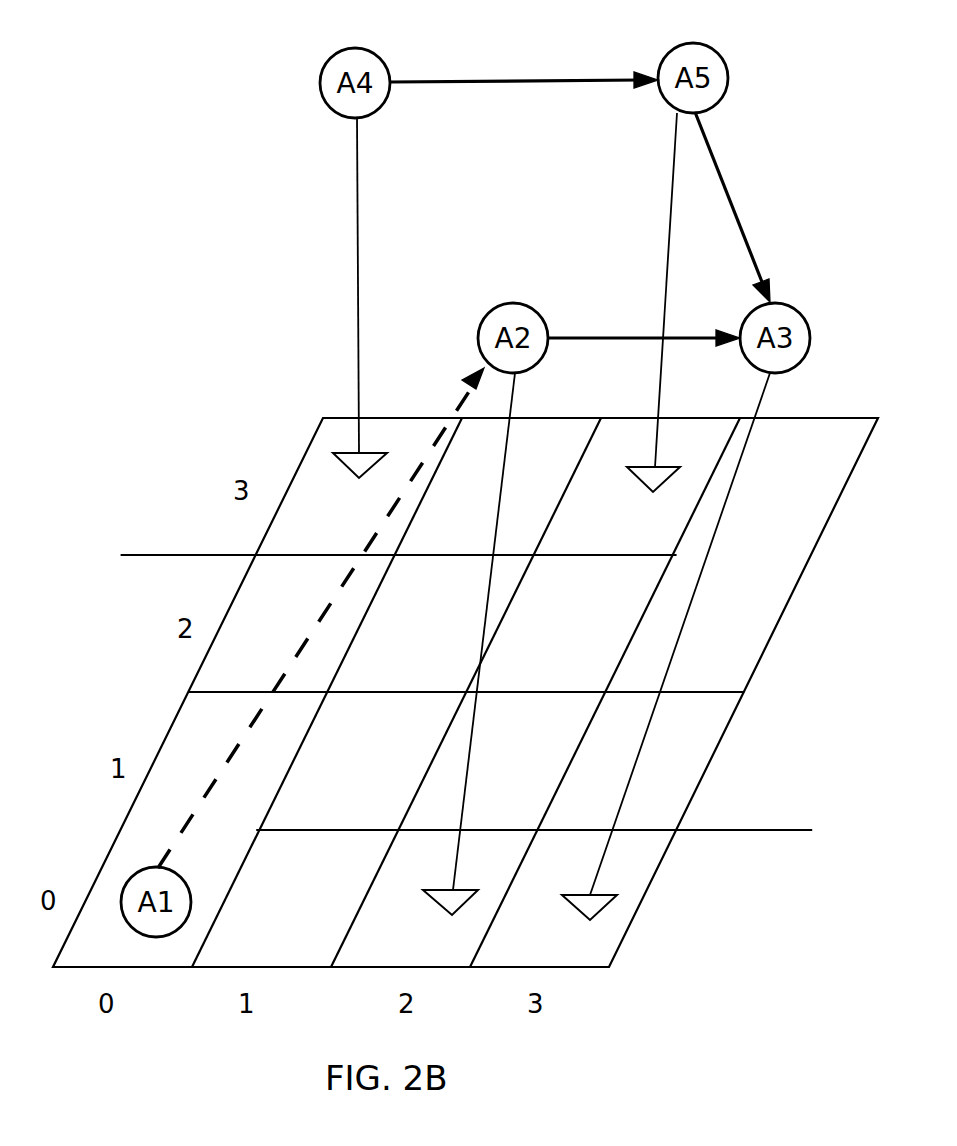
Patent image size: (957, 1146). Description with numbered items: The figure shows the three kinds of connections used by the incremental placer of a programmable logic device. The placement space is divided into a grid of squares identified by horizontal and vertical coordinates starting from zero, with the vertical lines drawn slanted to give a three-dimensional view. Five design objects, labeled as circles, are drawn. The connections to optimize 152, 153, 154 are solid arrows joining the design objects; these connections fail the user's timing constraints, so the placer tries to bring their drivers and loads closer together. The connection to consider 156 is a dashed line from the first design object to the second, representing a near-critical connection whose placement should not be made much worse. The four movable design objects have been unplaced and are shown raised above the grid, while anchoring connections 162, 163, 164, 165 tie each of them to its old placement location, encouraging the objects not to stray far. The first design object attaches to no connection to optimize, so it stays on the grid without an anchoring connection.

The connection to optimize 152 is at (560, 84).
The connection to optimize 153 is at (742, 210).
The connection to optimize 154 is at (567, 338).
The connection to consider 156 is at (320, 625).
The anchoring connection 162 is at (486, 600).
The anchoring connection 163 is at (692, 605).
The anchoring connection 164 is at (360, 280).
The anchoring connection 165 is at (672, 200).